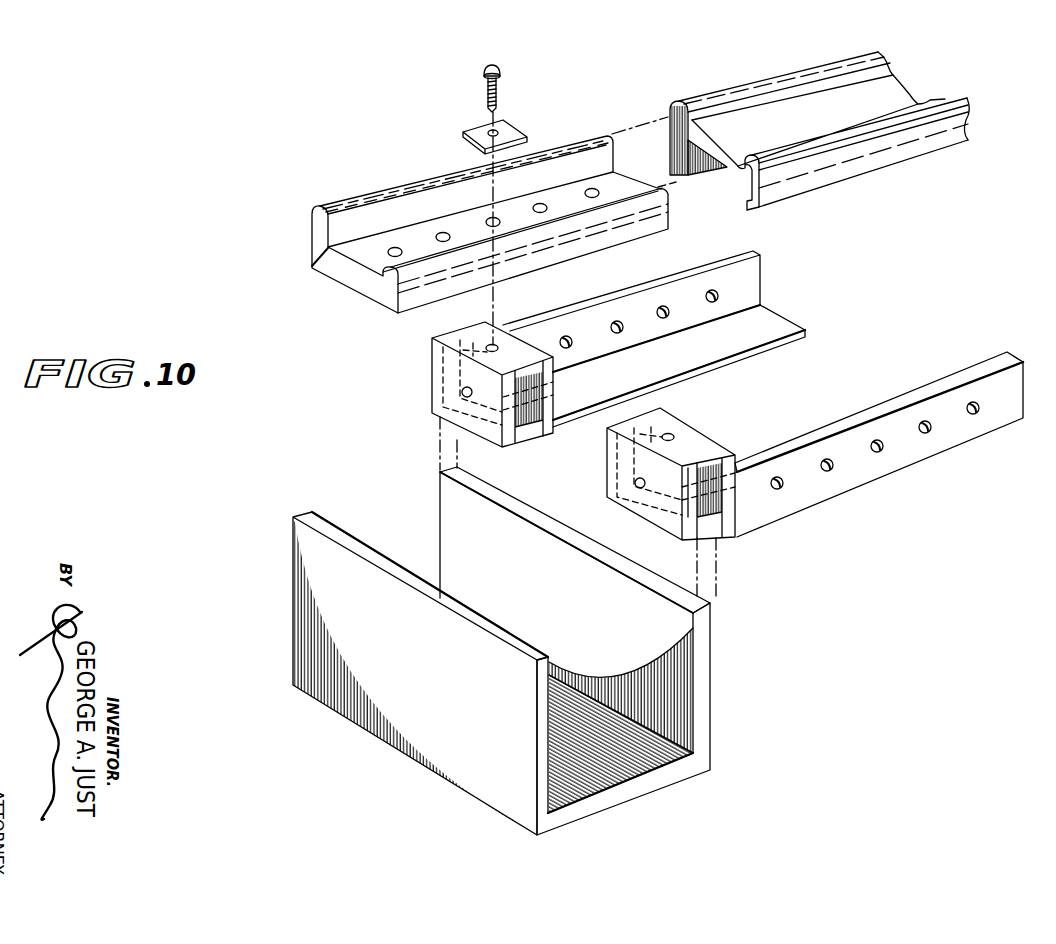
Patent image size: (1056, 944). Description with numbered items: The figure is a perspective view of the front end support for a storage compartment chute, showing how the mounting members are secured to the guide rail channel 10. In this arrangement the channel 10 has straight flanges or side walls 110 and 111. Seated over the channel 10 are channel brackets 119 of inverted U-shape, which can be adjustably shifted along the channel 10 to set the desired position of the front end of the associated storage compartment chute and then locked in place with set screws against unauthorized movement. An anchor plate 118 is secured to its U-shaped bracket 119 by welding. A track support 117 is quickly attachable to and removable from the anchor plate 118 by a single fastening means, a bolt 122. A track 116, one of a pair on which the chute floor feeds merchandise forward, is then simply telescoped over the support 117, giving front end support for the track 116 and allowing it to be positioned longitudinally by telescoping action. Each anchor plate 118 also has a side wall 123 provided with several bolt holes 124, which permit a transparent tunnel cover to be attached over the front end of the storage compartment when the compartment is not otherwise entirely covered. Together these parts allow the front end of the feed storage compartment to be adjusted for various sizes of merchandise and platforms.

The guide rail channel 10 is at (535, 651).
The side wall 110 is at (536, 739).
The side wall 111 is at (708, 681).
The track 116 is at (826, 182).
The track support 117 is at (417, 185).
The anchor plate 118 is at (742, 341).
The channel bracket 119 is at (437, 388).
The bolt 122 is at (503, 84).
The side wall 123 is at (763, 394).
The bolt holes 124 is at (616, 321).